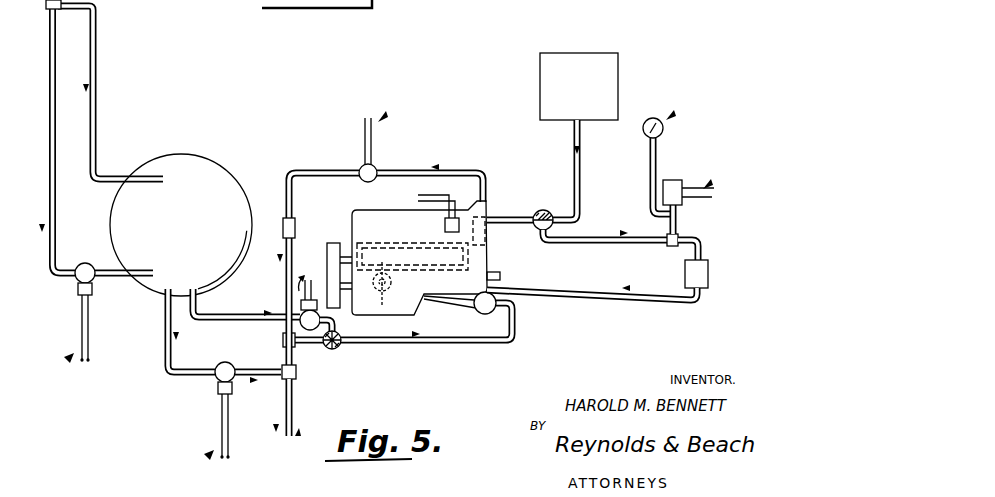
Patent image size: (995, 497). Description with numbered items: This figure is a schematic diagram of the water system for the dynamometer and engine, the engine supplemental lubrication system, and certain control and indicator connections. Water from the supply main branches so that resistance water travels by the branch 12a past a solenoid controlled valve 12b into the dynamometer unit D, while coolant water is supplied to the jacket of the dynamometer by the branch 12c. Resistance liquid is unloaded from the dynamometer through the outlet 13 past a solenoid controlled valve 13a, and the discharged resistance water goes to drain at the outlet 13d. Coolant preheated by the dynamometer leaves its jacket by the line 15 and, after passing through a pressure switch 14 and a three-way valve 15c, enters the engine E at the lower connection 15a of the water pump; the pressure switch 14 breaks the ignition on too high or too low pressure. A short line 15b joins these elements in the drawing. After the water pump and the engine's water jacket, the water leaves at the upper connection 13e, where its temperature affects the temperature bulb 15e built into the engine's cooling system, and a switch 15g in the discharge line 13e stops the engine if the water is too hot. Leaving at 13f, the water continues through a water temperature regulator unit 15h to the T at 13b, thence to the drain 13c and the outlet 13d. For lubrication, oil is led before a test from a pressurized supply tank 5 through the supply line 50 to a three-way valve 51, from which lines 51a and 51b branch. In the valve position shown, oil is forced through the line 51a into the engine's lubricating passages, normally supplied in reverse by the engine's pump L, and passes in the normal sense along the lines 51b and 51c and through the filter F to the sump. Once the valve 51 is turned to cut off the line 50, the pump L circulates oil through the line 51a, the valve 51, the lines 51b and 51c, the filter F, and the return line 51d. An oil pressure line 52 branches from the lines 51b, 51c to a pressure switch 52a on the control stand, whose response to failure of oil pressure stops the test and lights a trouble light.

The resistance water branch 12a is at (56, 190).
The solenoid controlled valve 12b is at (86, 262).
The coolant water branch 12c is at (97, 28).
The dynamometer unit D is at (203, 163).
The resistance water outlet 13 is at (163, 293).
The solenoid controlled valve 13a is at (218, 378).
The T fitting 13b is at (282, 340).
The drain 13c is at (297, 375).
The outlet 13d is at (294, 408).
The upper connection 13e is at (472, 174).
The water leaving point 13f is at (287, 185).
The pressure switch 14 is at (321, 326).
The coolant outlet line 15 is at (230, 318).
The lower connection 15a is at (499, 308).
The pipe 15b is at (326, 346).
The three-way valve 15c is at (338, 348).
The temperature bulb 15e is at (445, 227).
The switch 15g is at (375, 168).
The water temperature regulator unit 15h is at (284, 219).
The engine E is at (355, 221).
The engine pump L is at (392, 288).
The pressurized supply tank 5 is at (614, 82).
The supply line 50 is at (580, 172).
The three-way valve 51 is at (541, 230).
The line 51a is at (518, 210).
The line 51b is at (597, 243).
The line 51c is at (700, 252).
The return line 51d is at (588, 296).
The oil pressure line 52 is at (677, 229).
The pressure switch 52a is at (672, 180).
The filter F is at (708, 274).